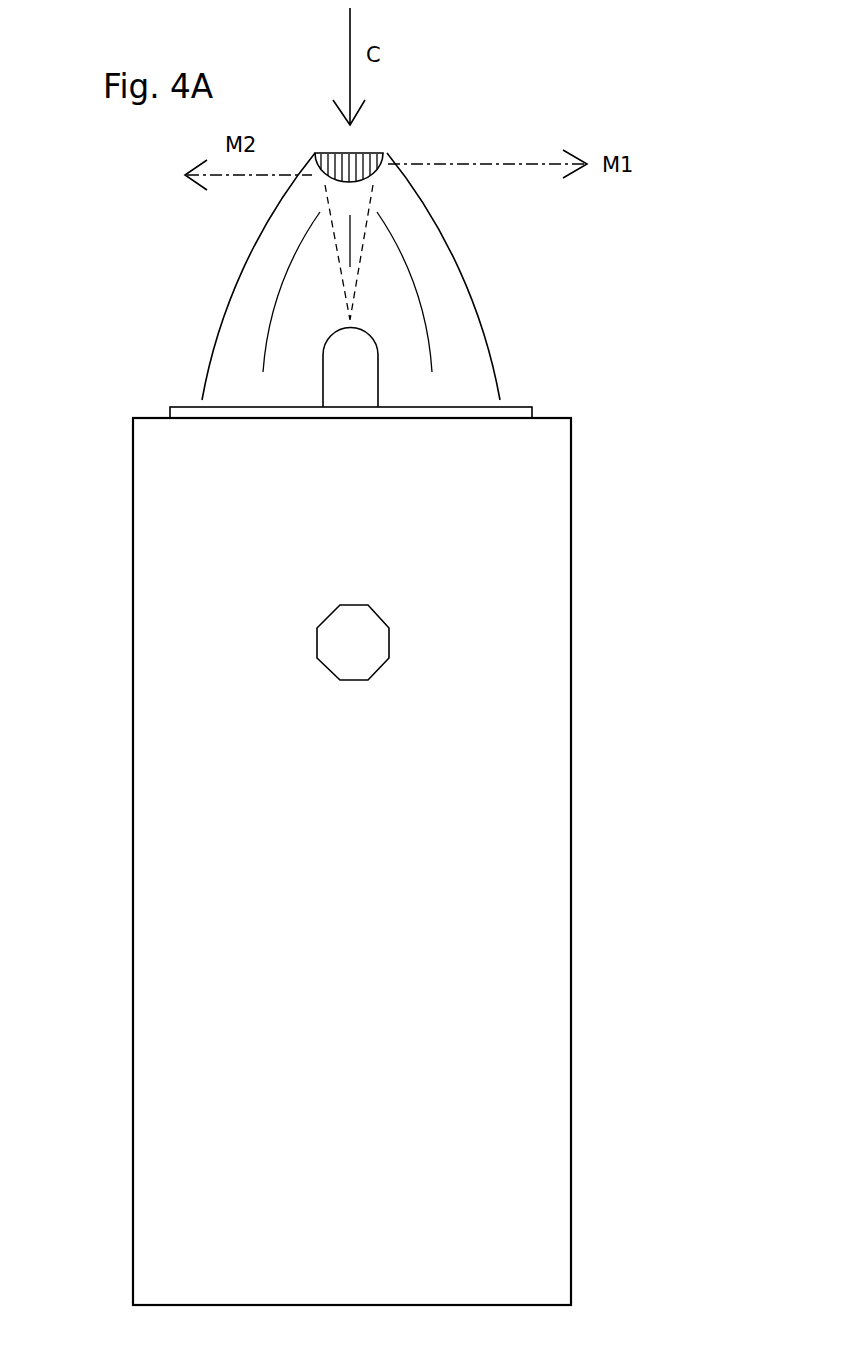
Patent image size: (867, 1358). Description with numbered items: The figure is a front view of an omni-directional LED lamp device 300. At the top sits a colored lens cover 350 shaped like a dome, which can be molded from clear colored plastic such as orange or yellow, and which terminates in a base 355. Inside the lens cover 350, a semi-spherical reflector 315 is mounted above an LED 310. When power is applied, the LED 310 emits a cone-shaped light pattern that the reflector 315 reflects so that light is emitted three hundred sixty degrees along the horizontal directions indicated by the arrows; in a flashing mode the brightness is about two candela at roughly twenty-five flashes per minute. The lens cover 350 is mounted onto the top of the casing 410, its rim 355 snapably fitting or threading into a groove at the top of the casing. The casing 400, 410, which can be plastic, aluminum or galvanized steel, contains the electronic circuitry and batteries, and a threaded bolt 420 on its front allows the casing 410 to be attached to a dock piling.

The omni-directional LED lamp device 300 is at (663, 230).
The LED 310 is at (357, 370).
The semi-spherical reflector 315 is at (383, 152).
The colored lens cover 350 is at (237, 260).
The base 355 is at (513, 413).
The casing 400 is at (668, 733).
The casing 410 is at (518, 622).
The threaded bolt 420 is at (347, 653).